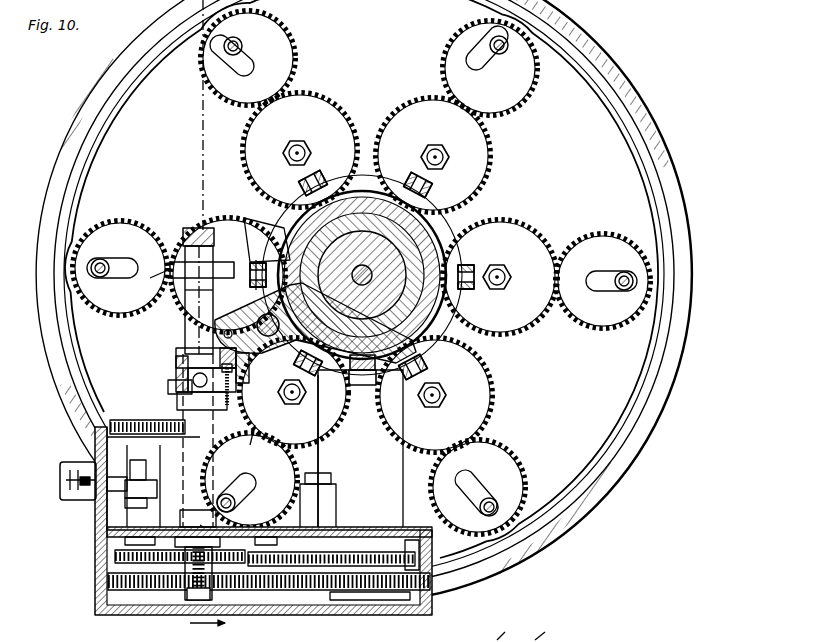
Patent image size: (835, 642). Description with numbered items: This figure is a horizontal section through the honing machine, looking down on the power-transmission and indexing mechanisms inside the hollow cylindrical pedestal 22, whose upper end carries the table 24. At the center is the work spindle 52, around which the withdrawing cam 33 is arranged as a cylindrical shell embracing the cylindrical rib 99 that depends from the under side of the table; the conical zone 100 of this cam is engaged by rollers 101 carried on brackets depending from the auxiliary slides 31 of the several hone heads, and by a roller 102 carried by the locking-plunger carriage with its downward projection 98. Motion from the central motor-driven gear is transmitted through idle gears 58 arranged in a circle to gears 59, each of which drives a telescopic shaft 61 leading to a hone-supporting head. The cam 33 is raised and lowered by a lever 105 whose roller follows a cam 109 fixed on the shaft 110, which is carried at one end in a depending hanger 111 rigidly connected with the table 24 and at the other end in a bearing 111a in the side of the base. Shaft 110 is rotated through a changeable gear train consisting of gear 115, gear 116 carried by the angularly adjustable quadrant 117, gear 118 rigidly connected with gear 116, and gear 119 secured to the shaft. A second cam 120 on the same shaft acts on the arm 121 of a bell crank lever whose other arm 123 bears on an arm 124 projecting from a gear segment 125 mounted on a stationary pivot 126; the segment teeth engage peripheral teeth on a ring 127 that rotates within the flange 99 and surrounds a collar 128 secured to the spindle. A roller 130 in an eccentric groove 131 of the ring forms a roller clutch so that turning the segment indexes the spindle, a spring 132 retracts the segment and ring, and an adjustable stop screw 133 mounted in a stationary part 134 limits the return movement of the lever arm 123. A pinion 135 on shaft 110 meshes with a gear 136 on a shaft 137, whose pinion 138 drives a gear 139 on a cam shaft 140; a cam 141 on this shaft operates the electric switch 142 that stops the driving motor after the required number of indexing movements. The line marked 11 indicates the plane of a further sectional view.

The section line 11 is at (207, 631).
The base frame or pedestal 22 is at (620, 115).
The table 24 is at (546, 634).
The auxiliary slide 31 is at (430, 184).
The cam 33 is at (444, 350).
The work spindle 52 is at (380, 275).
The idle gear 58 is at (310, 100).
The gear 59 is at (287, 50).
The telescopic shaft 61 is at (248, 58).
The downward projection 98 is at (372, 385).
The cylindrical rib 99 is at (432, 306).
The conical zone 100 is at (436, 328).
The rollers 101 is at (436, 206).
The roller 102 is at (352, 400).
The lever 105 is at (236, 258).
The cam 109 is at (168, 270).
The shaft 110 is at (185, 316).
The depending hanger 111 is at (203, 215).
The bearing 111a is at (180, 518).
The gear 115 is at (400, 570).
The gear 116 is at (365, 580).
The quadrant 117 is at (338, 545).
The gear 118 is at (310, 567).
The gear 119 is at (135, 592).
The cam 120 is at (176, 378).
The arm 121 is at (186, 388).
The arm 123 is at (215, 357).
The arm 124 is at (248, 330).
The gear segment 125 is at (272, 337).
The stationary pivot 126 is at (249, 368).
The ring 127 is at (356, 372).
The collar 128 is at (370, 386).
The roller 130 is at (272, 252).
The eccentric groove 131 is at (270, 262).
The spring 132 is at (510, 631).
The adjustable stop screw 133 is at (255, 425).
The stationary part 134 is at (232, 394).
The pinion 135 is at (195, 598).
The gear 136 is at (108, 580).
The shaft 137 is at (172, 470).
The pinion 138 is at (180, 414).
The gear 139 is at (97, 430).
The cam shaft 140 is at (135, 505).
The cam 141 is at (115, 492).
The electric switch 142 is at (60, 480).